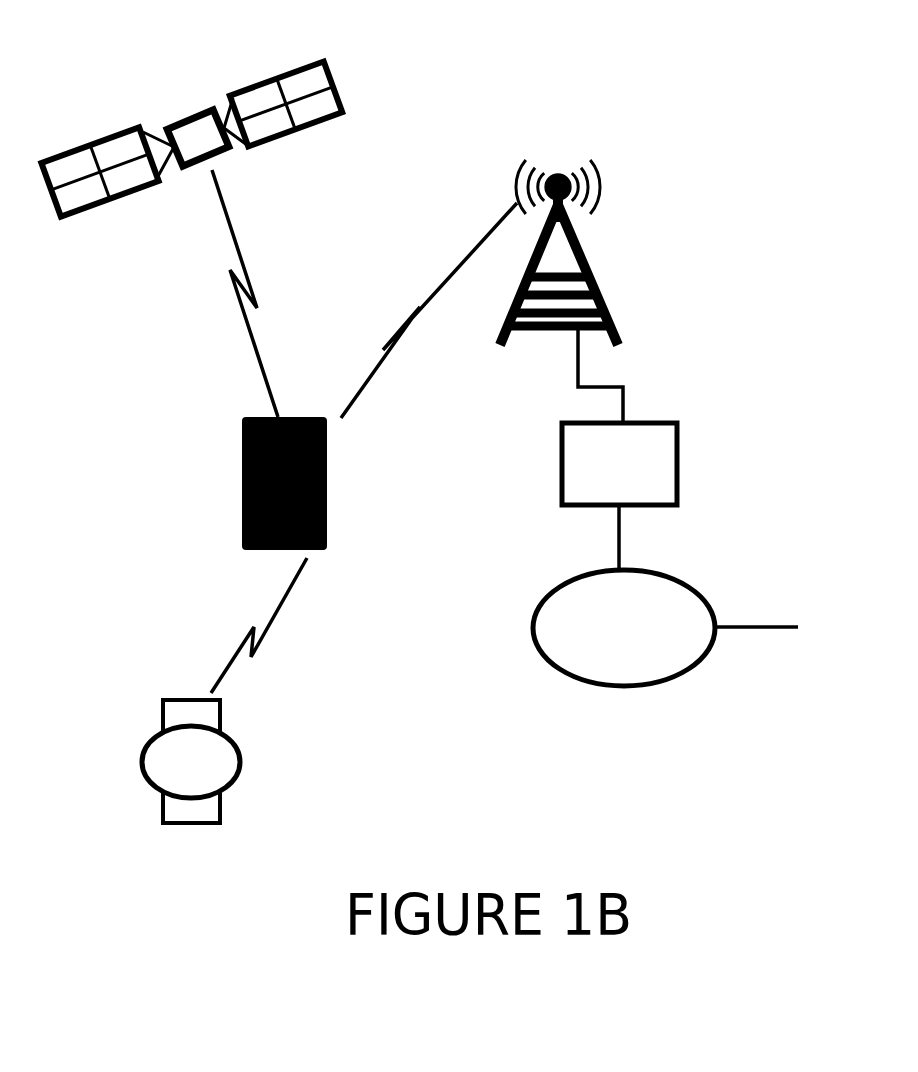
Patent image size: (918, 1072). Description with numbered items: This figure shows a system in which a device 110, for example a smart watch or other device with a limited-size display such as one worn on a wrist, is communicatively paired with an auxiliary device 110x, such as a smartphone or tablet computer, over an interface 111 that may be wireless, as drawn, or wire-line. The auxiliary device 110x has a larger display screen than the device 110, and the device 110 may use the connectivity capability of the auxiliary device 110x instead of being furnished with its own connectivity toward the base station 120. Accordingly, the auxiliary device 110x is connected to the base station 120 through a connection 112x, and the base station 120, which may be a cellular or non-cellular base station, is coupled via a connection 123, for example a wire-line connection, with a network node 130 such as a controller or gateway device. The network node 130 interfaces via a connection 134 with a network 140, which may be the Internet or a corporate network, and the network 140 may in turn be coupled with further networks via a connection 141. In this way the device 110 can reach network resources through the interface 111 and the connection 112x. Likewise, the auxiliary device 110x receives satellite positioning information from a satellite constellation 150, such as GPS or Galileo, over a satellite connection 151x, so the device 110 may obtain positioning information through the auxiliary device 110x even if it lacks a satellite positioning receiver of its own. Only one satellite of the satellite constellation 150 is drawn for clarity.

The satellite constellation 150 is at (200, 113).
The satellite connection of auxiliary device 151x is at (250, 277).
The connection 112x is at (393, 332).
The base station 120 is at (598, 292).
The connection 123 is at (623, 395).
The network node 130 is at (645, 481).
The connection 134 is at (619, 543).
The network 140 is at (655, 643).
The connection 141 is at (747, 630).
The auxiliary device 110x is at (243, 490).
The interface 111 is at (242, 633).
The device 110 is at (162, 795).